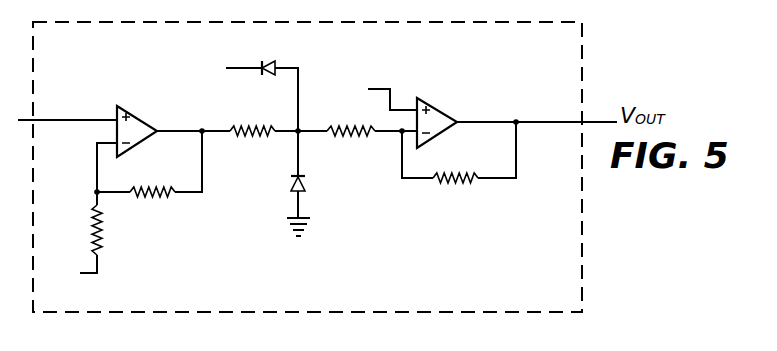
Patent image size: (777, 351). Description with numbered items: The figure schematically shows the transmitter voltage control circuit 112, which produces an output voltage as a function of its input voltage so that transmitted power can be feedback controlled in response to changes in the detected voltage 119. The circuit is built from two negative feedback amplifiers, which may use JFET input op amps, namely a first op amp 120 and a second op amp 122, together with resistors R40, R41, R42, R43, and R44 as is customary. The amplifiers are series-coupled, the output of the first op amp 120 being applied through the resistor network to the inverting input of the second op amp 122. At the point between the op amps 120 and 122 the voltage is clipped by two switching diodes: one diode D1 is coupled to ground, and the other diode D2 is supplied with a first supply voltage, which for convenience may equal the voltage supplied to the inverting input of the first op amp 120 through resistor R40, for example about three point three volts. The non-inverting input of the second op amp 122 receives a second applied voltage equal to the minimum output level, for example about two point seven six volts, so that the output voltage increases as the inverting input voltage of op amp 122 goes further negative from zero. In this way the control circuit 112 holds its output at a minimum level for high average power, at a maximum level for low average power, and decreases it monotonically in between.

The transmitter voltage control circuit 112 is at (583, 53).
The detected voltage 119 is at (80, 104).
The first op amp 120 is at (138, 116).
The second op amp 122 is at (440, 102).
The resistor R40 is at (103, 232).
The resistor R41 is at (160, 196).
The resistor R42 is at (259, 137).
The resistor R43 is at (350, 137).
The resistor R44 is at (458, 183).
The switching diode D1 is at (306, 186).
The switching diode D2 is at (270, 60).